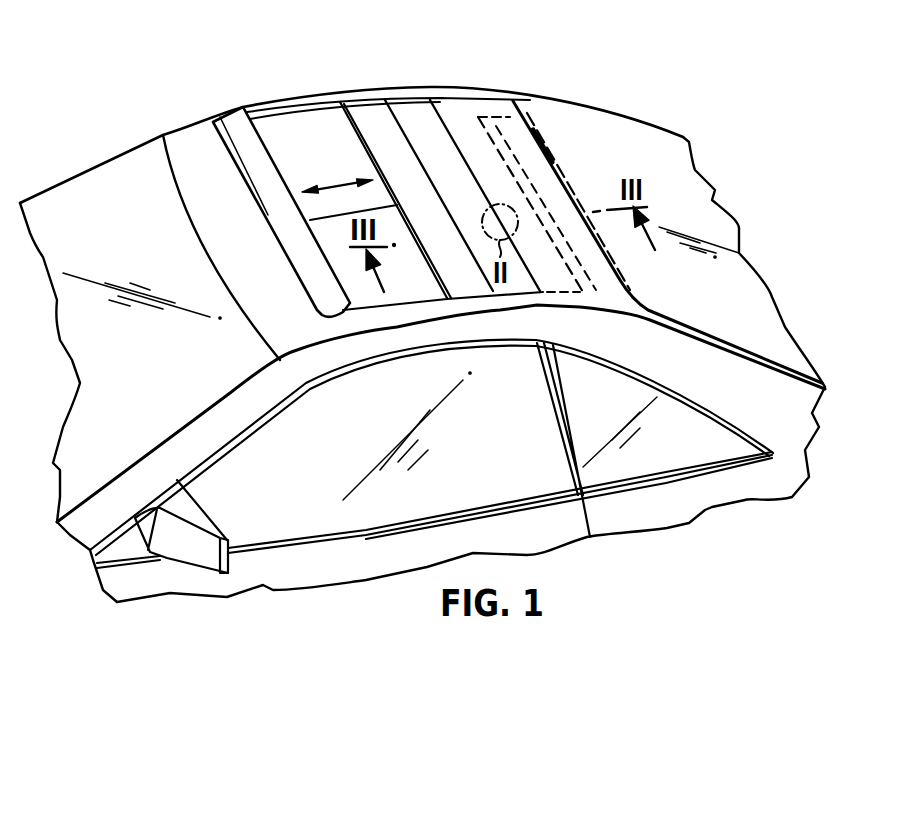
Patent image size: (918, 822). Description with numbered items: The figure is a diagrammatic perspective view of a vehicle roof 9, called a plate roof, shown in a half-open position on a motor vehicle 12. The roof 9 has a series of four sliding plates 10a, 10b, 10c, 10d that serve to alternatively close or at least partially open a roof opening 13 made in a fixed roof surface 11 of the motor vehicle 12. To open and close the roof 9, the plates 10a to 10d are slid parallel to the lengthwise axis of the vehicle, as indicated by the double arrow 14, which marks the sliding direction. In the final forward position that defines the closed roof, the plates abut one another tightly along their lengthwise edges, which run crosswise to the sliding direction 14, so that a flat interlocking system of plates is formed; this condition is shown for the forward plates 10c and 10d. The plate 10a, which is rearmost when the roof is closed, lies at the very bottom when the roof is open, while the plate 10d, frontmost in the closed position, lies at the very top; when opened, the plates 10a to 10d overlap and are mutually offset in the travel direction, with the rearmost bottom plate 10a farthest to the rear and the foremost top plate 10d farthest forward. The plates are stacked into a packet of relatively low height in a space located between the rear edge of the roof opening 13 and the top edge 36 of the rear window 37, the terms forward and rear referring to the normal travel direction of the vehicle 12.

The vehicle roof 9 is at (180, 114).
The sliding plate 10a is at (505, 100).
The sliding plate 10b is at (458, 123).
The sliding plate 10c is at (418, 118).
The sliding plate 10d is at (367, 123).
The fixed roof surface 11 is at (213, 150).
The motor vehicle 12 is at (690, 525).
The roof opening 13 is at (292, 142).
The double arrow 14 is at (337, 172).
The top edge of rear window 36 is at (540, 136).
The rear window 37 is at (692, 217).